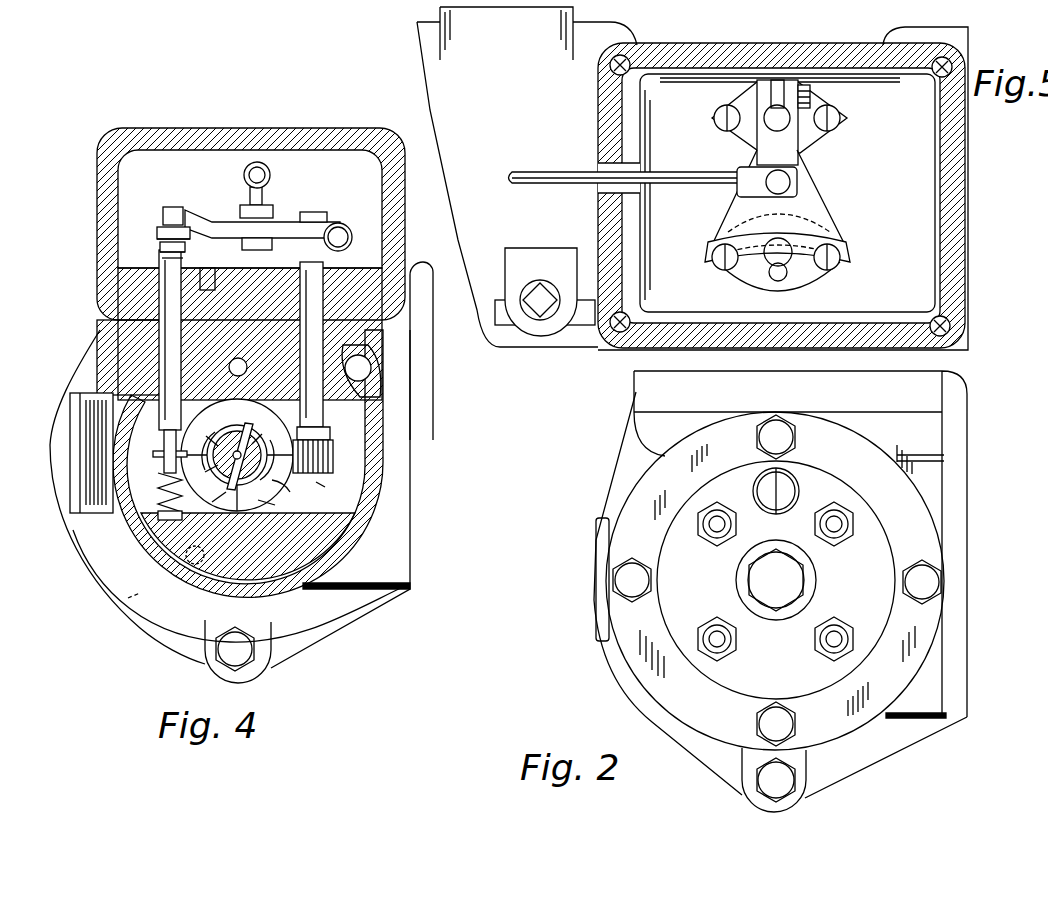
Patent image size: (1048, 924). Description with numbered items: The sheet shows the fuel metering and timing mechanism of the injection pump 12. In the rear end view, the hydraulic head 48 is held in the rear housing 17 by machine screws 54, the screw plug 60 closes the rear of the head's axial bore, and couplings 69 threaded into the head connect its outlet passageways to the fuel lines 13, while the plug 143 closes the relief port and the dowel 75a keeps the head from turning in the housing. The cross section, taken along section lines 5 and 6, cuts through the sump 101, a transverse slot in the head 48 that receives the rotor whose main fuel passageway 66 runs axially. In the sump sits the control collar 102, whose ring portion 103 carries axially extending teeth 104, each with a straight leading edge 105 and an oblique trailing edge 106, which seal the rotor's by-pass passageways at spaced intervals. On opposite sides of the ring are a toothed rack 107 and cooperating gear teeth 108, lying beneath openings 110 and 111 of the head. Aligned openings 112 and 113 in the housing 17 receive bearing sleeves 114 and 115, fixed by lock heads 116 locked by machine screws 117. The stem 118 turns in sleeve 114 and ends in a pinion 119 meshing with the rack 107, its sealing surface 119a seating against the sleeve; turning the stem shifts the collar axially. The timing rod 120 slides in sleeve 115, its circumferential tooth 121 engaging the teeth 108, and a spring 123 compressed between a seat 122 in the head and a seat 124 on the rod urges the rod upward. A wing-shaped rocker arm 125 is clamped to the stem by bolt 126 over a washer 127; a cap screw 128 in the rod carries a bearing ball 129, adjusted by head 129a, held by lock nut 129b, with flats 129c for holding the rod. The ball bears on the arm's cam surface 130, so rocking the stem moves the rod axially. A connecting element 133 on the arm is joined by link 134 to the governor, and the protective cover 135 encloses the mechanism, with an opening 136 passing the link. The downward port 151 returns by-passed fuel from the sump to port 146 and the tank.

In FIG. 4, the section line 5- 5 is at (80, 149).
In FIG. 4, the section line 6- 6 is at (43, 422).
In FIG. 4, the injection pump 12 is at (226, 320).
In FIG. 2, the injection pump 12 is at (780, 591).
In FIG. 2, the fuel lines 13 is at (729, 637).
In FIG. 4, the housing 17 is at (187, 608).
In FIG. 4, the hydraulic head 48 is at (330, 535).
In FIG. 2, the hydraulic head 48 is at (775, 581).
In FIG. 2, the machine screws 54 is at (782, 440).
In FIG. 2, the screw plug 60 is at (776, 580).
In FIG. 4, the main fuel passageway 66 is at (262, 432).
In FIG. 2, the couplings 69 is at (716, 626).
In FIG. 4, the dowel 75a is at (128, 598).
In FIG. 4, the sump 101 is at (342, 501).
In FIG. 4, the control collar 102 is at (334, 485).
In FIG. 4, the ring portion 103 is at (209, 501).
In FIG. 4, the teeth 104 is at (279, 505).
In FIG. 4, the leading edge 105 is at (266, 432).
In FIG. 4, the trailing edge 106 is at (202, 433).
In FIG. 4, the toothed rack 107 is at (294, 490).
In FIG. 4, the gear teeth 108 is at (204, 471).
In FIG. 4, the opening 110 is at (336, 396).
In FIG. 4, the opening 111 is at (150, 430).
In FIG. 4, the opening 112 is at (458, 344).
In FIG. 4, the opening 113 is at (160, 330).
In FIG. 4, the bearing sleeve 114 is at (372, 350).
In FIG. 4, the bearing sleeve 115 is at (128, 277).
In FIG. 4, the lock heads 116 is at (200, 283).
In FIG. 5, the lock heads 116 is at (757, 80).
In FIG. 5, the machine screws 117 is at (714, 118).
In FIG. 4, the stem 118 is at (372, 380).
In FIG. 4, the pinion 119 is at (360, 458).
In FIG. 4, the sealing surface 119a is at (340, 437).
In FIG. 4, the timing rod 120 is at (160, 316).
In FIG. 4, the circumferential tooth 121 is at (163, 453).
In FIG. 4, the seat 122 is at (180, 480).
In FIG. 4, the spring 123 is at (165, 495).
In FIG. 4, the seat 124 is at (158, 475).
In FIG. 4, the rocker arm 125 is at (214, 222).
In FIG. 5, the rocker arm 125 is at (812, 212).
In FIG. 4, the bolt 126 is at (338, 237).
In FIG. 5, the bolt 126 is at (810, 95).
In FIG. 4, the washer 127 is at (328, 265).
In FIG. 4, the cap screw 128 is at (160, 252).
In FIG. 5, the cap screw 128 is at (770, 270).
In FIG. 4, the bearing ball 129 is at (157, 232).
In FIG. 5, the bearing ball 129 is at (781, 274).
In FIG. 4, the head 129a is at (160, 242).
In FIG. 4, the lock nut 129b is at (160, 258).
In FIG. 4, the flat surfaces 129c is at (170, 268).
In FIG. 4, the cam surface 130 is at (163, 215).
In FIG. 4, the connecting element 133 is at (262, 200).
In FIG. 5, the connecting element 133 is at (795, 170).
In FIG. 4, the link 134 is at (270, 176).
In FIG. 5, the link 134 is at (627, 190).
In FIG. 4, the protective cover 135 is at (230, 128).
In FIG. 5, the protective cover 135 is at (895, 335).
In FIG. 5, the opening 136 is at (598, 160).
In FIG. 2, the plug 143 is at (795, 508).
In FIG. 4, the port 146 is at (358, 370).
In FIG. 4, the port 151 is at (366, 395).